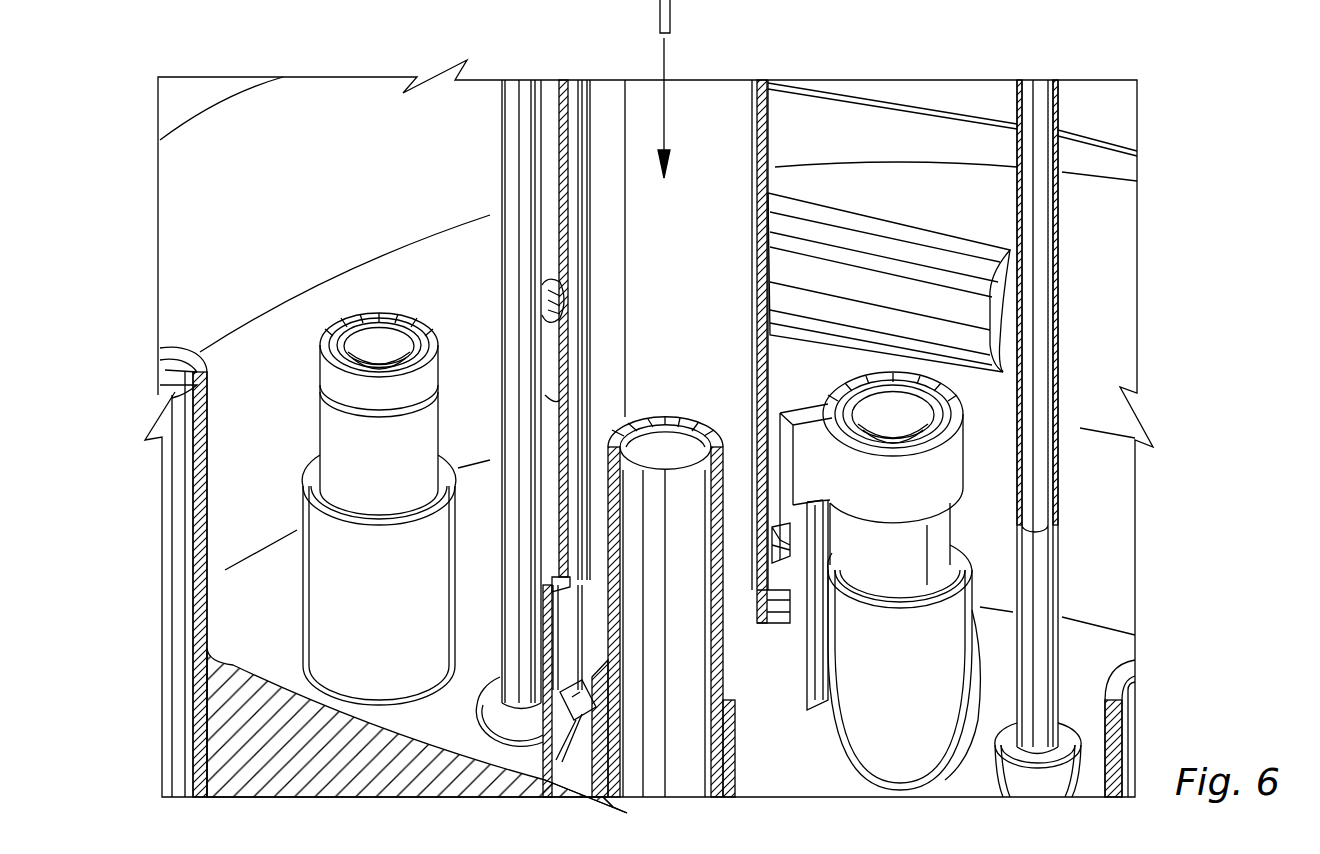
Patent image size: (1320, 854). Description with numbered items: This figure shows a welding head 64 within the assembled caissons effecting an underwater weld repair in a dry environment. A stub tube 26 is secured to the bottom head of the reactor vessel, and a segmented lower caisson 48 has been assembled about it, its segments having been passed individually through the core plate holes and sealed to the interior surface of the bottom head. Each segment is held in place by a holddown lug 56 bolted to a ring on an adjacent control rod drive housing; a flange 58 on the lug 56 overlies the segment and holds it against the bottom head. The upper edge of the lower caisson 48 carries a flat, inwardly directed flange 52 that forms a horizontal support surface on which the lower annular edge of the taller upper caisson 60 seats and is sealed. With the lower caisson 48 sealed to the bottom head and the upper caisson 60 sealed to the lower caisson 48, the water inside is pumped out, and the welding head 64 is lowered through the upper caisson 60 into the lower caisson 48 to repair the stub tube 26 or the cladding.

The stub tube 26 is at (727, 740).
The lower caisson 48 is at (780, 767).
The flange 52 is at (553, 562).
The holddown lug 56 is at (808, 425).
The flange 58 is at (772, 540).
The upper caisson 60 is at (757, 122).
The welding head 64 is at (563, 717).